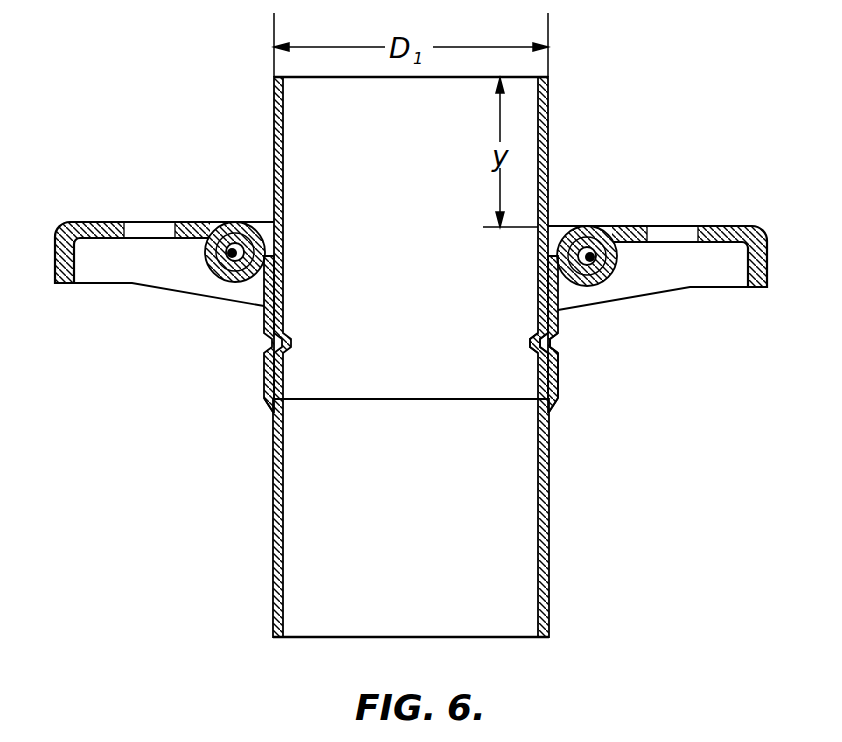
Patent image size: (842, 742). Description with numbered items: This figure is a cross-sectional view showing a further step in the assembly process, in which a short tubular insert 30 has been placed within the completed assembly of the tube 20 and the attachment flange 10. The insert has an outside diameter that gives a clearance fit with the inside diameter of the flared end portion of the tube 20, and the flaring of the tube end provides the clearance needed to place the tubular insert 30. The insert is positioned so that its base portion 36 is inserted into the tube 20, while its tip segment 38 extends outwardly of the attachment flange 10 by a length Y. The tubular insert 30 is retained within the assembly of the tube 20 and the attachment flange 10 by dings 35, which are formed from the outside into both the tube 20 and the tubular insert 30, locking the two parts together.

The attachment flange 10 is at (720, 225).
The tube 20 is at (549, 514).
The tubular insert 30 is at (274, 153).
The dings 35 is at (530, 339).
The base portion 36 is at (538, 378).
The tip segment 38 is at (548, 145).